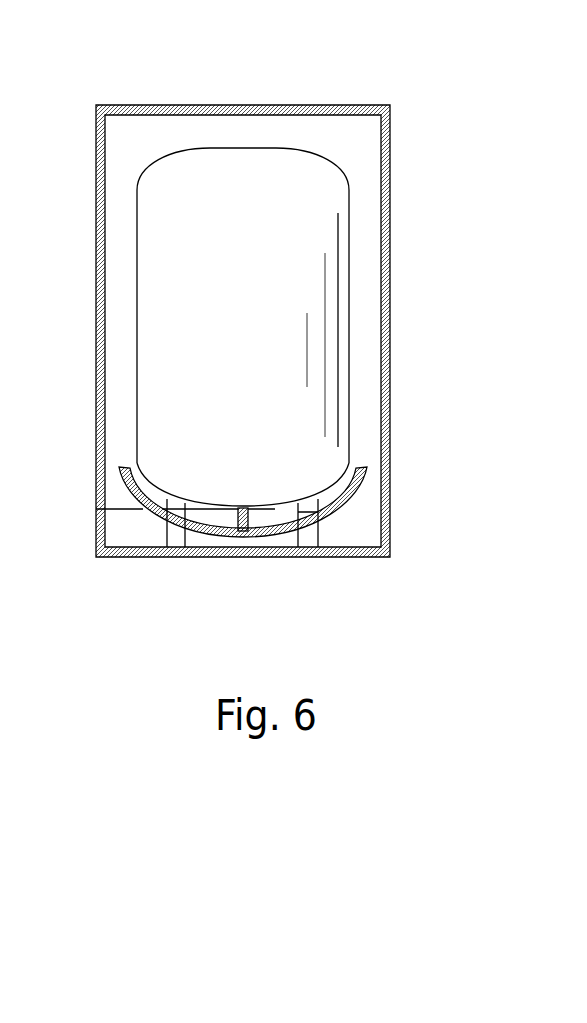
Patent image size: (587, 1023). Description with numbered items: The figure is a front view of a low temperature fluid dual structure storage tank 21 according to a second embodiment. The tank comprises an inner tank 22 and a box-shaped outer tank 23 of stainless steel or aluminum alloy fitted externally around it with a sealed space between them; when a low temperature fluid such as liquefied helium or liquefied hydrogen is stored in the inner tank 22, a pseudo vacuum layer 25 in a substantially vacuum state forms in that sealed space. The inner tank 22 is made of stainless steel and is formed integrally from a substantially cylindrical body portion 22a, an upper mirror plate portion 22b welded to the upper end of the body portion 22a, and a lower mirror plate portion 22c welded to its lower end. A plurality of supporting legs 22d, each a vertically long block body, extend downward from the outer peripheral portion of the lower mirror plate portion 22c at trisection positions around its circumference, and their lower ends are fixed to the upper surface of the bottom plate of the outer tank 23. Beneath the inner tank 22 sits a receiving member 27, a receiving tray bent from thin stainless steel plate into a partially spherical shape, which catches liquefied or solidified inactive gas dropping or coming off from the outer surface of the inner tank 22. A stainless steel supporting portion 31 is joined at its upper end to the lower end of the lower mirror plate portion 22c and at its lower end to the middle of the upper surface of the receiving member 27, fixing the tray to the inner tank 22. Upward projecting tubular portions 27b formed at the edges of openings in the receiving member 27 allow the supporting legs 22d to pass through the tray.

The low temperature fluid dual structure storage tank 21 is at (428, 121).
The inner tank 22 is at (352, 312).
The body portion 22a is at (352, 378).
The upper mirror plate portion 22b is at (202, 147).
The lower mirror plate portion 22c is at (273, 508).
The supporting legs 22d is at (170, 535).
The outer tank 23 is at (273, 104).
The pseudo vacuum layer 25 is at (360, 231).
The receiving member 27 is at (348, 497).
The tubular portions 27b is at (96, 509).
The supporting portion 31 is at (222, 537).